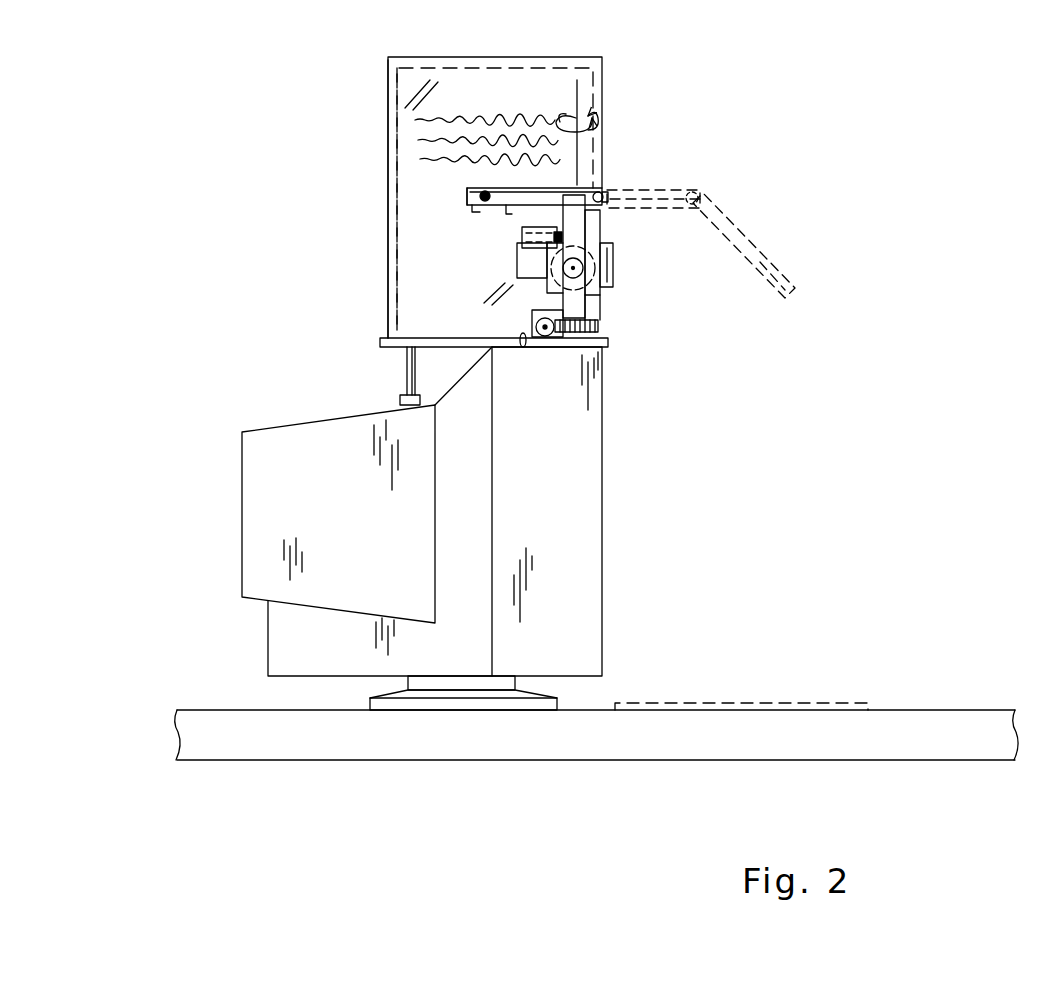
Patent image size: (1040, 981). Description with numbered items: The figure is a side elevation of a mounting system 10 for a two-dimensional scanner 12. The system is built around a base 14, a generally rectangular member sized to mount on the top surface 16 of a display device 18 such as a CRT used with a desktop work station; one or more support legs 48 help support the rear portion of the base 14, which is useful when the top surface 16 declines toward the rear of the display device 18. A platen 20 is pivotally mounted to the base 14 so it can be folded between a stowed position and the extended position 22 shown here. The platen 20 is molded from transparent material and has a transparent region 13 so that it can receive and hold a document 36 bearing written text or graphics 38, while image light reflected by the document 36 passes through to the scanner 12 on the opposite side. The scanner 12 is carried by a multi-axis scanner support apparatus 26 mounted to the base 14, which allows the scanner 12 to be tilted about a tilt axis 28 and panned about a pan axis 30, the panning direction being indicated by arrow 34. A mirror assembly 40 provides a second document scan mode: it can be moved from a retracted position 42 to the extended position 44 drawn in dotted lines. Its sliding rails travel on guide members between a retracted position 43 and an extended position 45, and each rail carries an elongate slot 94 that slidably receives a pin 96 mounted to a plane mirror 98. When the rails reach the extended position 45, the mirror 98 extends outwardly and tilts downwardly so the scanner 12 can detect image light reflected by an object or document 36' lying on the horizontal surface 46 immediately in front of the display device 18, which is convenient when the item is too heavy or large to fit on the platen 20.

The mounting system 10 is at (250, 80).
The two-dimensional scanner 12 is at (517, 266).
The transparent region 13 is at (410, 328).
The base 14 is at (380, 342).
The top surface 16 is at (522, 347).
The display device 18 is at (240, 482).
The platen 20 is at (460, 55).
The extended position 22 is at (388, 70).
The multi-axis scanner support apparatus 26 is at (586, 303).
The tilt axis 28 is at (574, 268).
The pan axis 30 is at (578, 94).
The arrow 34 is at (592, 130).
The document 36 is at (495, 171).
The object or document 36' is at (741, 665).
The written text or graphics 38 is at (432, 160).
The mirror assembly 40 is at (466, 196).
The retracted position 42 is at (488, 206).
The retracted position 43 is at (512, 206).
The extended position 44 is at (780, 280).
The extended position 45 is at (660, 190).
The horizontal surface 46 is at (943, 710).
The support leg 48 is at (405, 368).
The elongate slot 94 is at (542, 188).
The pin 96 is at (483, 170).
The plane mirror 98 is at (744, 240).